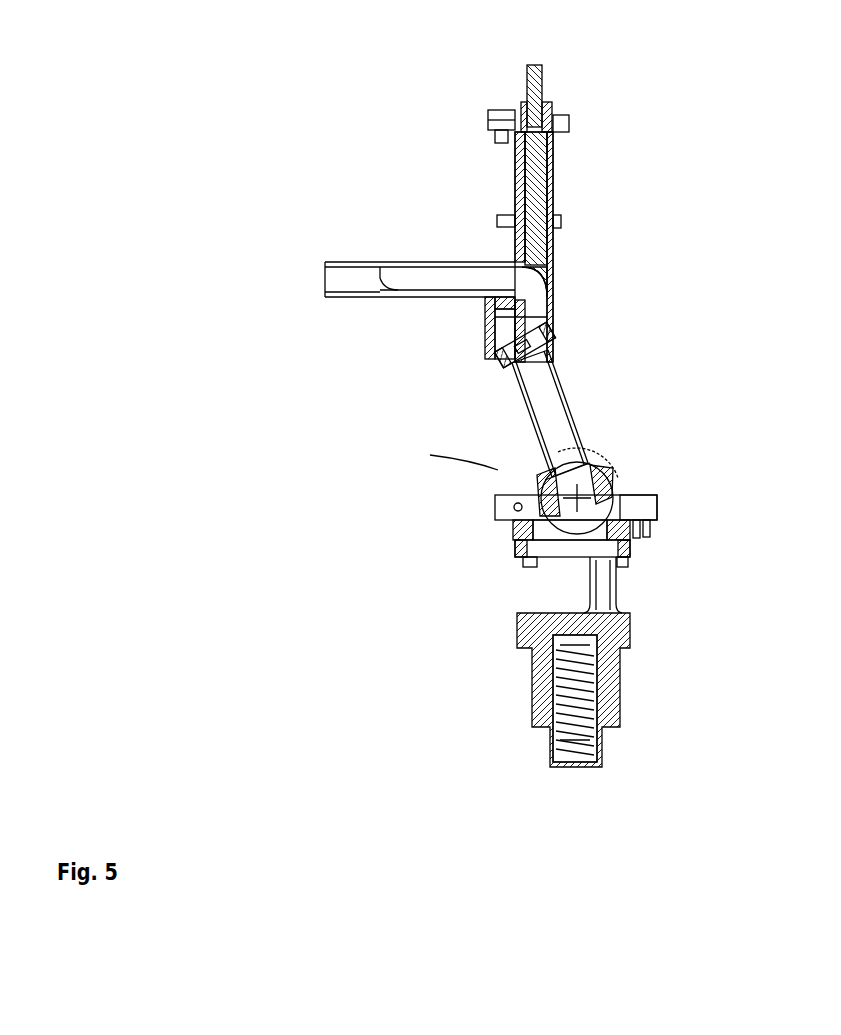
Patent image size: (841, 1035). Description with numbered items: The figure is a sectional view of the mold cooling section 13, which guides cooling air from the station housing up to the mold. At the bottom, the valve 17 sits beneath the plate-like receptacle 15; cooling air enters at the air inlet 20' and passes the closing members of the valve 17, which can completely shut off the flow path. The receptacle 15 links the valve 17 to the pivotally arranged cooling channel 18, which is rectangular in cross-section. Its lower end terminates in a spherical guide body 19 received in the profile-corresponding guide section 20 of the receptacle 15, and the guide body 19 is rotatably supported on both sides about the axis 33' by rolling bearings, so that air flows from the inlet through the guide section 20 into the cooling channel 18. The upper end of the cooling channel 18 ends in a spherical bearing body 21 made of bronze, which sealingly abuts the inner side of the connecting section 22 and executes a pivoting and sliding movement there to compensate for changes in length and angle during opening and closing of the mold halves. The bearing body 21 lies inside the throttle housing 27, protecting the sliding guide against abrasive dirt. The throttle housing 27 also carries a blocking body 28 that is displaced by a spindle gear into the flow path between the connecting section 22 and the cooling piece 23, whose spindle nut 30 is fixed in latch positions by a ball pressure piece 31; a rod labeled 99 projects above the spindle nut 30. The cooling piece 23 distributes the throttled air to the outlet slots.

The rod 99 is at (556, 80).
The spindle nut 30 is at (552, 104).
The ball pressure piece 31 is at (572, 120).
The throttle housing 27 is at (556, 195).
The blocking body 28 is at (550, 250).
The cooling piece 23 is at (460, 276).
The connecting section 22 is at (476, 332).
The bearing body 21 is at (556, 347).
The cooling channel 18 is at (540, 400).
The axis 33' is at (585, 441).
The guide body 19 is at (600, 468).
The guide section 20 is at (637, 480).
The receptacle 15 is at (658, 507).
The air inlet 20' is at (530, 551).
The valve 17 is at (540, 690).
The mold cooling section 13 is at (498, 470).